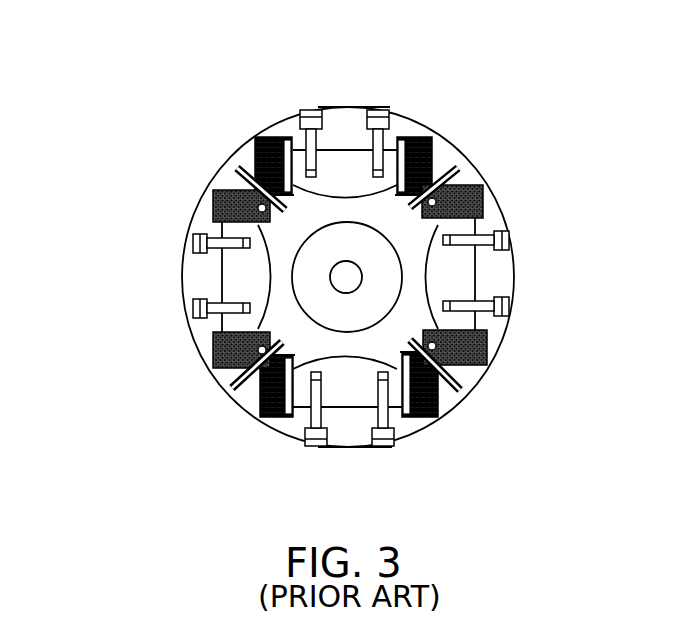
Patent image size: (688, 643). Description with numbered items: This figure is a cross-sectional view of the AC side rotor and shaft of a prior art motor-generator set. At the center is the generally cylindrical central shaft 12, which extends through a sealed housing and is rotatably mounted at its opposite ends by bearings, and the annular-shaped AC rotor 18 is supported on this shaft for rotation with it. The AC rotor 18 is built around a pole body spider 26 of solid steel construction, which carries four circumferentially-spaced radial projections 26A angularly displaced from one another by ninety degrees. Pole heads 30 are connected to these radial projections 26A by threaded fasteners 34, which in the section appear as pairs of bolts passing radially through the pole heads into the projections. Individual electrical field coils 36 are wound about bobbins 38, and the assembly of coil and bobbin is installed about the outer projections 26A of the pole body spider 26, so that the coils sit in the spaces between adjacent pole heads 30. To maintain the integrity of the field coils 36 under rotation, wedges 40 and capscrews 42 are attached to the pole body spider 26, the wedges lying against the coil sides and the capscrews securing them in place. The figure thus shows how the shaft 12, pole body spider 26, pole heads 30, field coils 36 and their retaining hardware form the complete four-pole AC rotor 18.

The central shaft 12 is at (362, 268).
The AC rotor 18 is at (278, 120).
The pole body spider 26 is at (216, 276).
The radial projections 26A is at (290, 130).
The pole heads 30 is at (400, 130).
The threaded fasteners 34 is at (370, 110).
The electrical field coils 36 is at (428, 129).
The bobbins 38 is at (348, 279).
The wedges 40 is at (232, 188).
The capscrews 42 is at (245, 165).